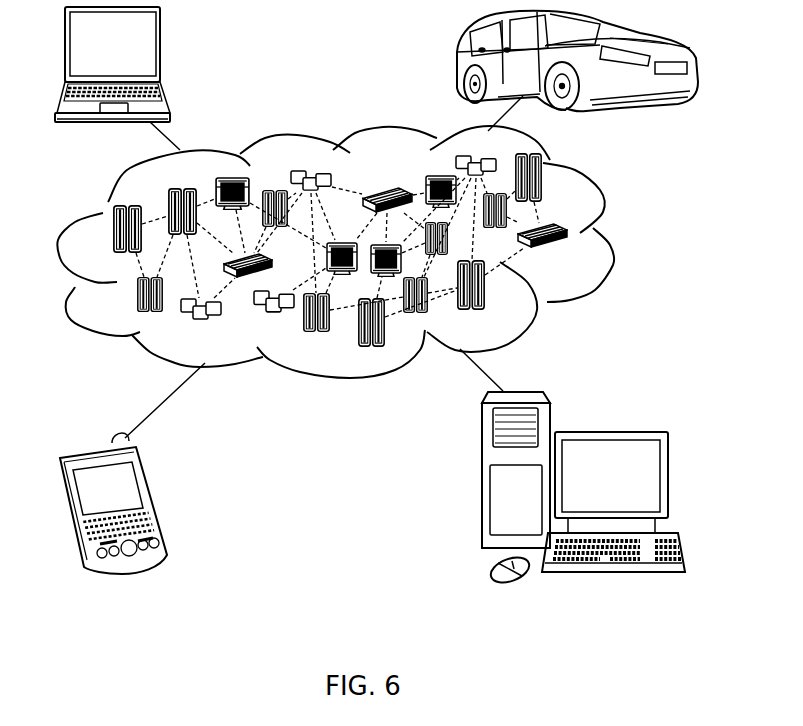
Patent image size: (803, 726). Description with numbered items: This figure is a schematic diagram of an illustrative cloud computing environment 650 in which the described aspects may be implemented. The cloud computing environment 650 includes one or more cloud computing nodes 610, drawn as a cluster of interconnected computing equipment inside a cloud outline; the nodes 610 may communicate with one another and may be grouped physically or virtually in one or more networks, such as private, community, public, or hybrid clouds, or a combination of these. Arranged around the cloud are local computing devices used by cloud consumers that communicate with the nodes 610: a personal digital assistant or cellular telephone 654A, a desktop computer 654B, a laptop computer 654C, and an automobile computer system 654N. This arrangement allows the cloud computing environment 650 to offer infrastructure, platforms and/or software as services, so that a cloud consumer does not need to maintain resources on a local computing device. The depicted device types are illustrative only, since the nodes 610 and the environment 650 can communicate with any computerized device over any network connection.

The cloud computing nodes 610 is at (578, 259).
The cloud computing environment 650 is at (607, 238).
The personal digital assistant or cellular telephone 654A is at (155, 497).
The desktop computer 654B is at (610, 432).
The laptop computer 654C is at (160, 51).
The automobile computer system 654N is at (460, 65).